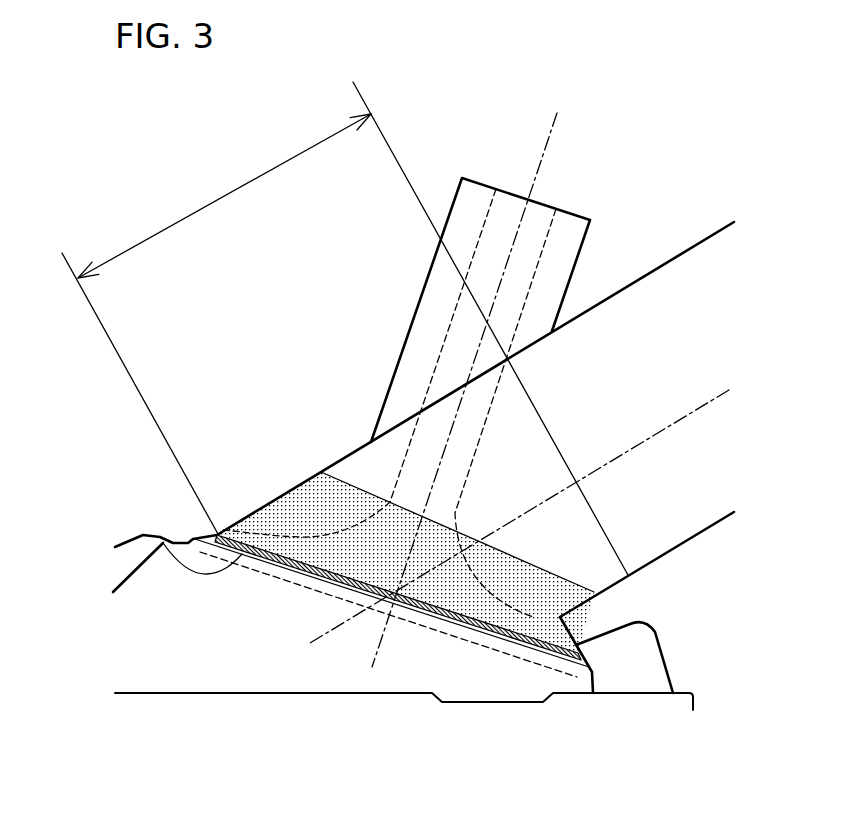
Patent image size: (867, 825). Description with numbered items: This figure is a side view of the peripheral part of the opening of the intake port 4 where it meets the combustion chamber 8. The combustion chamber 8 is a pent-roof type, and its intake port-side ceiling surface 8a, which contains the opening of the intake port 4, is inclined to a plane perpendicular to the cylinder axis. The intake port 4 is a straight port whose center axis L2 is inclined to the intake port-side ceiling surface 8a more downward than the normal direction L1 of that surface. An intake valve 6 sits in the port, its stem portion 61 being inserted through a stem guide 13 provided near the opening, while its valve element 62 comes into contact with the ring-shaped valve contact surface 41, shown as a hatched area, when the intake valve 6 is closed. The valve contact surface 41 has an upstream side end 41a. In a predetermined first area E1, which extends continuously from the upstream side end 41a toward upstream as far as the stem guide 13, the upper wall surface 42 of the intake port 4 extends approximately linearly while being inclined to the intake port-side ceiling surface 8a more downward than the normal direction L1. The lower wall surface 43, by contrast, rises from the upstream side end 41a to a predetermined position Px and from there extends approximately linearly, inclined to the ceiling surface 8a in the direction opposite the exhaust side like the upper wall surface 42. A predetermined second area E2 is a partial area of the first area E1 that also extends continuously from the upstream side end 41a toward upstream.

The intake port 4 is at (662, 263).
The intake valve 6 is at (437, 367).
The stem guide 13 is at (450, 208).
The stem portion 61 is at (536, 270).
The valve element 62 is at (573, 580).
The combustion chamber 8 is at (192, 650).
The intake port-side ceiling surface 8a is at (153, 533).
The valve contact surface 41 is at (432, 612).
The upstream side end 41a is at (217, 534).
The upper wall surface 42 is at (388, 443).
The lower wall surface 43 is at (652, 560).
The normal direction L1 is at (549, 133).
The center axis L2 is at (694, 410).
The predetermined first area E1 is at (345, 328).
The predetermined second area E2 is at (313, 517).
The predetermined position Px is at (565, 614).